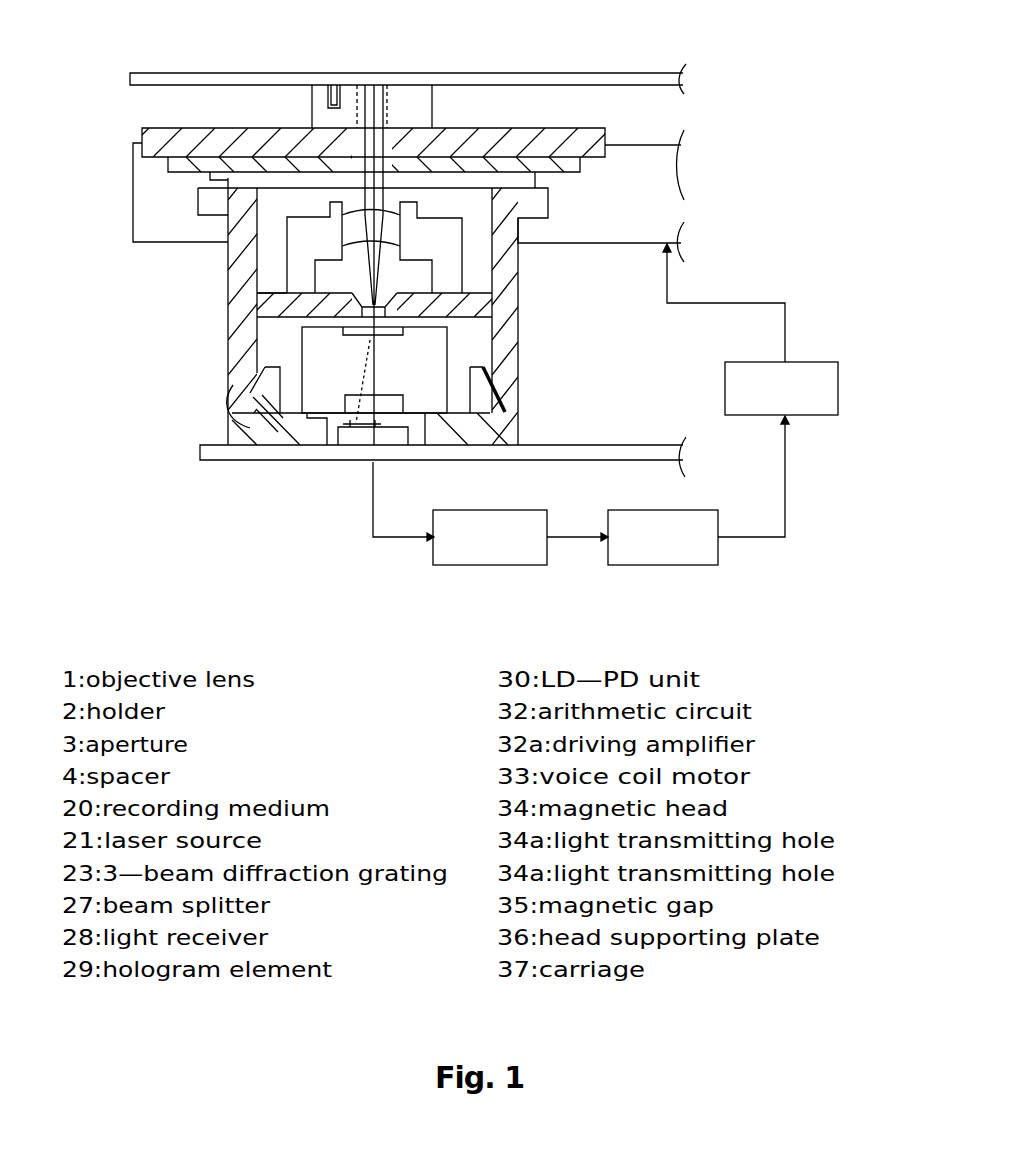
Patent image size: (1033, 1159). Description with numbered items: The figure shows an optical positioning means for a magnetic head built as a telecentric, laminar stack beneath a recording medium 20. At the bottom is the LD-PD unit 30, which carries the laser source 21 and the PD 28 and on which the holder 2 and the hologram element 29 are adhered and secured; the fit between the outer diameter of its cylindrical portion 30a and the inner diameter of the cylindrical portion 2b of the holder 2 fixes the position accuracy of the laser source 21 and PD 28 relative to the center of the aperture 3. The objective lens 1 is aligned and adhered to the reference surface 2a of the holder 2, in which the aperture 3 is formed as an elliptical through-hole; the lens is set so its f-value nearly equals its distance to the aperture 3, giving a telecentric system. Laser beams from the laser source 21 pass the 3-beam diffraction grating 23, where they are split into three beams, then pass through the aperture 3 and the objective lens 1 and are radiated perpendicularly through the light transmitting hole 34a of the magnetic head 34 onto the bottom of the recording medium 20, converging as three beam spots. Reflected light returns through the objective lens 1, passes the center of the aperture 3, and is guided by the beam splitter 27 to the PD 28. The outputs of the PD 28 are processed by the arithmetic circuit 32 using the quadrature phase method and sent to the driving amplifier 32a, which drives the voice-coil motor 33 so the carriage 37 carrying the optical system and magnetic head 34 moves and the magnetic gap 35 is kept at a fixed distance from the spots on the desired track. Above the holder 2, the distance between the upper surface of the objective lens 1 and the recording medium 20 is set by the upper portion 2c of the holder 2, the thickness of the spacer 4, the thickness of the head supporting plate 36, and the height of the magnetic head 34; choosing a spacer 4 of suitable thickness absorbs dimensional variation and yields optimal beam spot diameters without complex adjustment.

The objective lens 1 is at (325, 232).
The holder 2 is at (235, 345).
The reference surface 2a is at (277, 293).
The cylindrical portion 2b is at (253, 383).
The upper portion 2c is at (208, 178).
The aperture 3 is at (360, 312).
The spacer 4 is at (567, 163).
The recording medium 20 is at (633, 78).
The laser source 21 is at (385, 432).
The 3-beam diffraction grating 23 is at (403, 397).
The beam splitter 27 is at (443, 320).
The PD 28 is at (333, 447).
The hologram element 29 is at (438, 373).
The LD-PD unit 30 is at (280, 445).
The cylindrical portion 30a is at (232, 428).
The arithmetic circuit 32 is at (480, 558).
The driving amplifier 32a is at (675, 558).
The voice-coil motor 33 is at (745, 360).
The magnetic head 34 is at (410, 98).
The light transmitting hole 34a is at (390, 97).
The magnetic gap 35 is at (337, 92).
The head supporting plate 36 is at (607, 137).
The carriage 37 is at (673, 172).